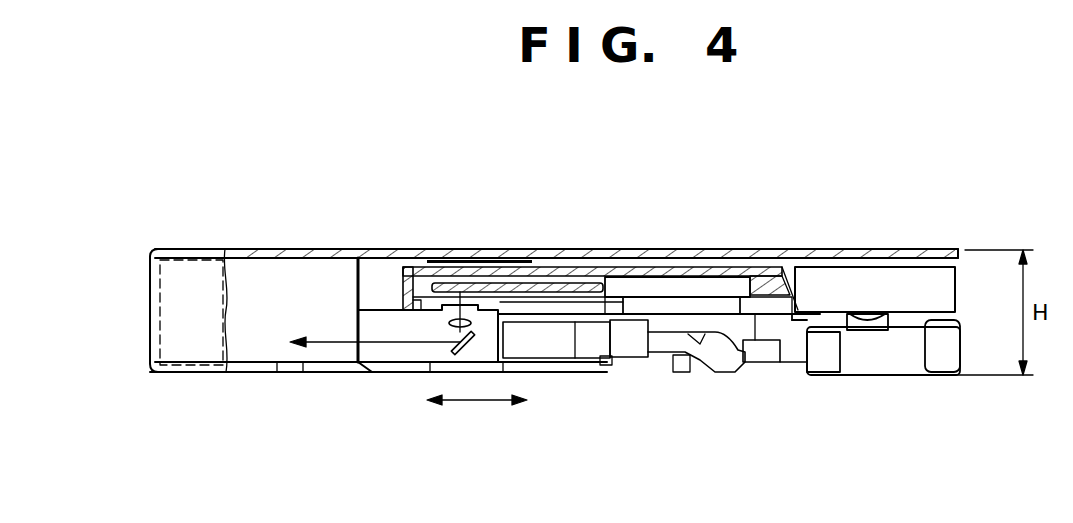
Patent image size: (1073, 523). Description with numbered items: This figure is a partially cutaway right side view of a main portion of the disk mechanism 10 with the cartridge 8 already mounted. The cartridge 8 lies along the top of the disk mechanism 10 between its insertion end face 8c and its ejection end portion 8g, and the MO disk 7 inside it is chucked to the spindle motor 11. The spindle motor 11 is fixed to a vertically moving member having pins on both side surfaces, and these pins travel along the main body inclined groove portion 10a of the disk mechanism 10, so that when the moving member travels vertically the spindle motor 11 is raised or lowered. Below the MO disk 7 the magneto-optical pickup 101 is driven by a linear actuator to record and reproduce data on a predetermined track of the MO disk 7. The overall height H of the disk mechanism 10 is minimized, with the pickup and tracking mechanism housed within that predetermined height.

The MO disk 7 is at (591, 290).
The cartridge 8 is at (670, 249).
The insertion end face 8c is at (389, 275).
The ejection end portion 8g is at (958, 280).
The disk mechanism 10 is at (756, 247).
The main body inclined groove portion 10a is at (722, 352).
The spindle motor 11 is at (662, 305).
The magneto-optical pickup 101 is at (413, 343).